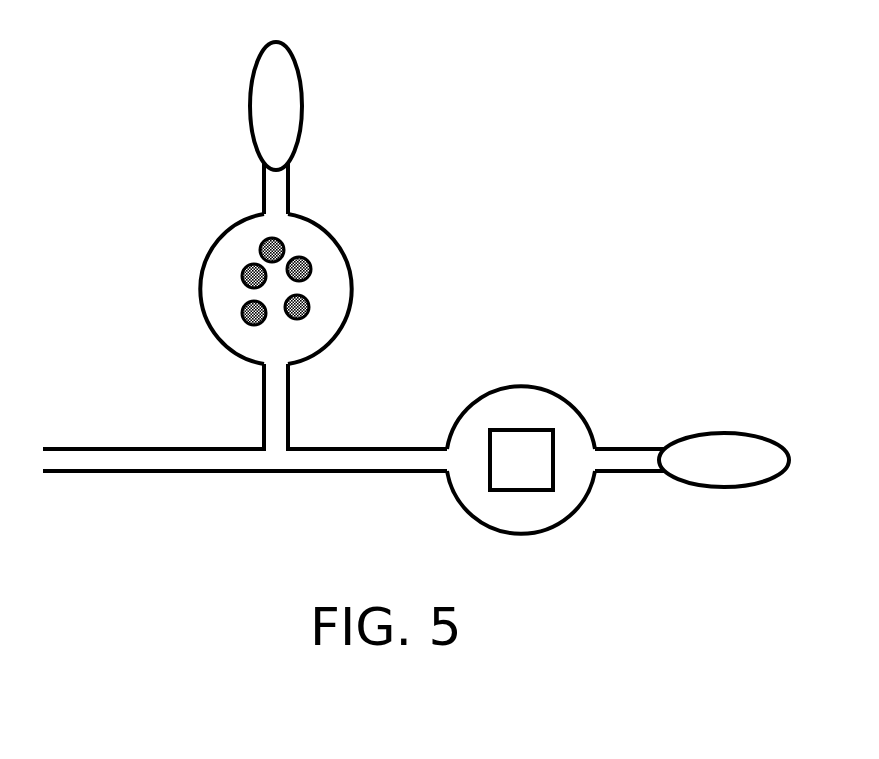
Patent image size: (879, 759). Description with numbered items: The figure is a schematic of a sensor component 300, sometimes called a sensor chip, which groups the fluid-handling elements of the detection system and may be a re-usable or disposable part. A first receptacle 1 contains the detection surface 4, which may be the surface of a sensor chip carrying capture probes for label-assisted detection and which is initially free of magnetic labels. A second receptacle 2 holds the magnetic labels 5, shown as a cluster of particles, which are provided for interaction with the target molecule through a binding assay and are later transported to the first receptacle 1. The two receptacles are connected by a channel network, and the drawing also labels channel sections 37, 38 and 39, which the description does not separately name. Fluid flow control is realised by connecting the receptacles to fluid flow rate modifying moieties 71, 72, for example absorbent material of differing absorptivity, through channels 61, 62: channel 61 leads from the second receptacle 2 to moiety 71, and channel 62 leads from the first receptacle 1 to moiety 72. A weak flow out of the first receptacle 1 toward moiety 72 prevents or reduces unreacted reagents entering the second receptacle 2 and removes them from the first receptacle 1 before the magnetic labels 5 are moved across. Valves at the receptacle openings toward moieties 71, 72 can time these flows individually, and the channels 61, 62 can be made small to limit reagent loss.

The sensor component 300 is at (668, 62).
The fluid flow rate modifying moiety 71 is at (262, 120).
The channel 61 is at (290, 185).
The second receptacle 2 is at (200, 288).
The magnetic label 5 is at (302, 316).
The branch channel 38 is at (289, 406).
The inlet channel 37 is at (107, 448).
The main channel 39 is at (372, 472).
The first receptacle 1 is at (521, 385).
The detection surface 4 is at (513, 472).
The channel 62 is at (630, 473).
The fluid flow rate modifying moiety 72 is at (710, 471).